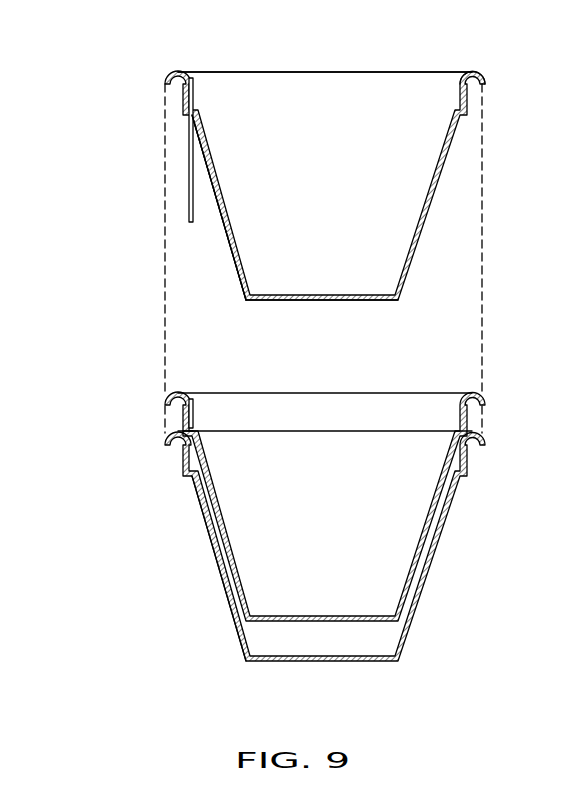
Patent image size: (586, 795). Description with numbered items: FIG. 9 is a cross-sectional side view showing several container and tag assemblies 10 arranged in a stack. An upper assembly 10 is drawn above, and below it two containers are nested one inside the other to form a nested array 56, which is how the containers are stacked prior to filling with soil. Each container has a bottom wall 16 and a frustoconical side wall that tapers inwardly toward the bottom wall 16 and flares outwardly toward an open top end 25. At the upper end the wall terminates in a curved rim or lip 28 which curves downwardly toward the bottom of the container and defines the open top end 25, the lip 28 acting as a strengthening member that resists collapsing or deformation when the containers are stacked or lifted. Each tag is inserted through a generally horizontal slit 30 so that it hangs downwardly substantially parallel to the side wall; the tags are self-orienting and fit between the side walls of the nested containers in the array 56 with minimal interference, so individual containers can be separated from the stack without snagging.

The assembly 10 is at (150, 55).
The bottom wall 16 is at (278, 297).
The open top end 25 is at (340, 74).
The lip 28 is at (472, 72).
The slit 30 is at (191, 429).
The nested array 56 is at (143, 426).